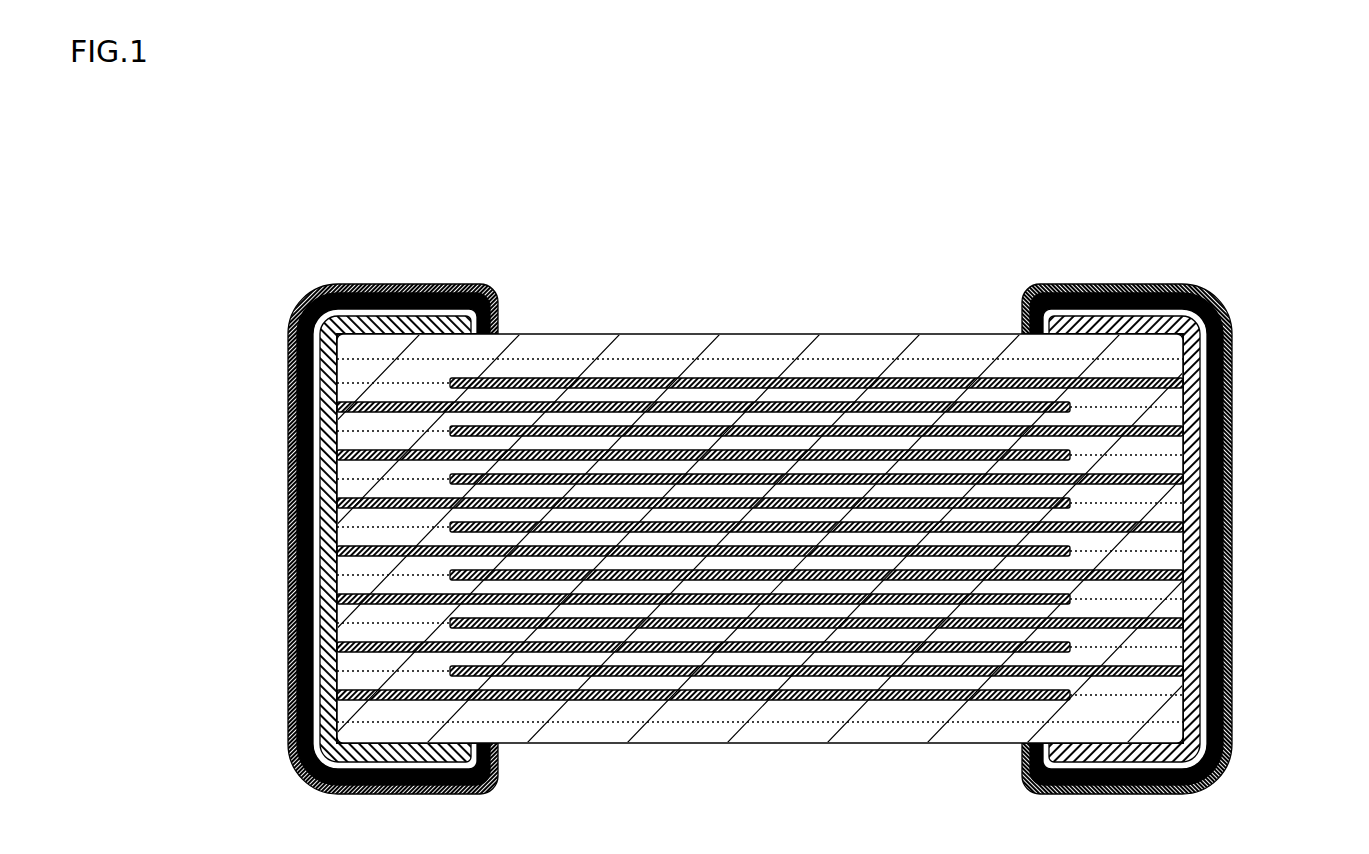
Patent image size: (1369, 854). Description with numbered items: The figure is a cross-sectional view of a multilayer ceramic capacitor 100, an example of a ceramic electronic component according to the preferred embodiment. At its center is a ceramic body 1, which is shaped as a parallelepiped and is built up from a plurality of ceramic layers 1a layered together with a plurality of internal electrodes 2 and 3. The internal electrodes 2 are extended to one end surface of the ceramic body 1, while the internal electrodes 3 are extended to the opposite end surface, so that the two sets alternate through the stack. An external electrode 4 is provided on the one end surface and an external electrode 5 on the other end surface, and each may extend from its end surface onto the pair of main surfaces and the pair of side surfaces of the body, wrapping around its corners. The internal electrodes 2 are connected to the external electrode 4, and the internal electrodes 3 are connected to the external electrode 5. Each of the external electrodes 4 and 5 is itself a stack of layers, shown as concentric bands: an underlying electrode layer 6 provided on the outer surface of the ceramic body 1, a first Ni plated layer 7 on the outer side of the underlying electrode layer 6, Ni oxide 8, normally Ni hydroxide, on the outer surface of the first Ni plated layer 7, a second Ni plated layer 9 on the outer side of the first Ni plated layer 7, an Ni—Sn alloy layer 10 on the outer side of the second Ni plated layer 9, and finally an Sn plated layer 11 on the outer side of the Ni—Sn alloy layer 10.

The multilayer ceramic capacitor 100 is at (276, 153).
The ceramic body 1 is at (698, 539).
The ceramic layer 1a is at (1172, 348).
The internal electrode 2 is at (337, 407).
The internal electrode 3 is at (450, 381).
The external electrode 4 is at (467, 187).
The external electrode 5 is at (1197, 187).
The underlying electrode layer 6 is at (337, 284).
The first Ni plated layer 7 is at (352, 284).
The Ni oxide 8 is at (370, 284).
The second Ni plated layer 9 is at (388, 284).
The Ni—Sn alloy layer 10 is at (410, 284).
The Sn plated layer 11 is at (432, 284).